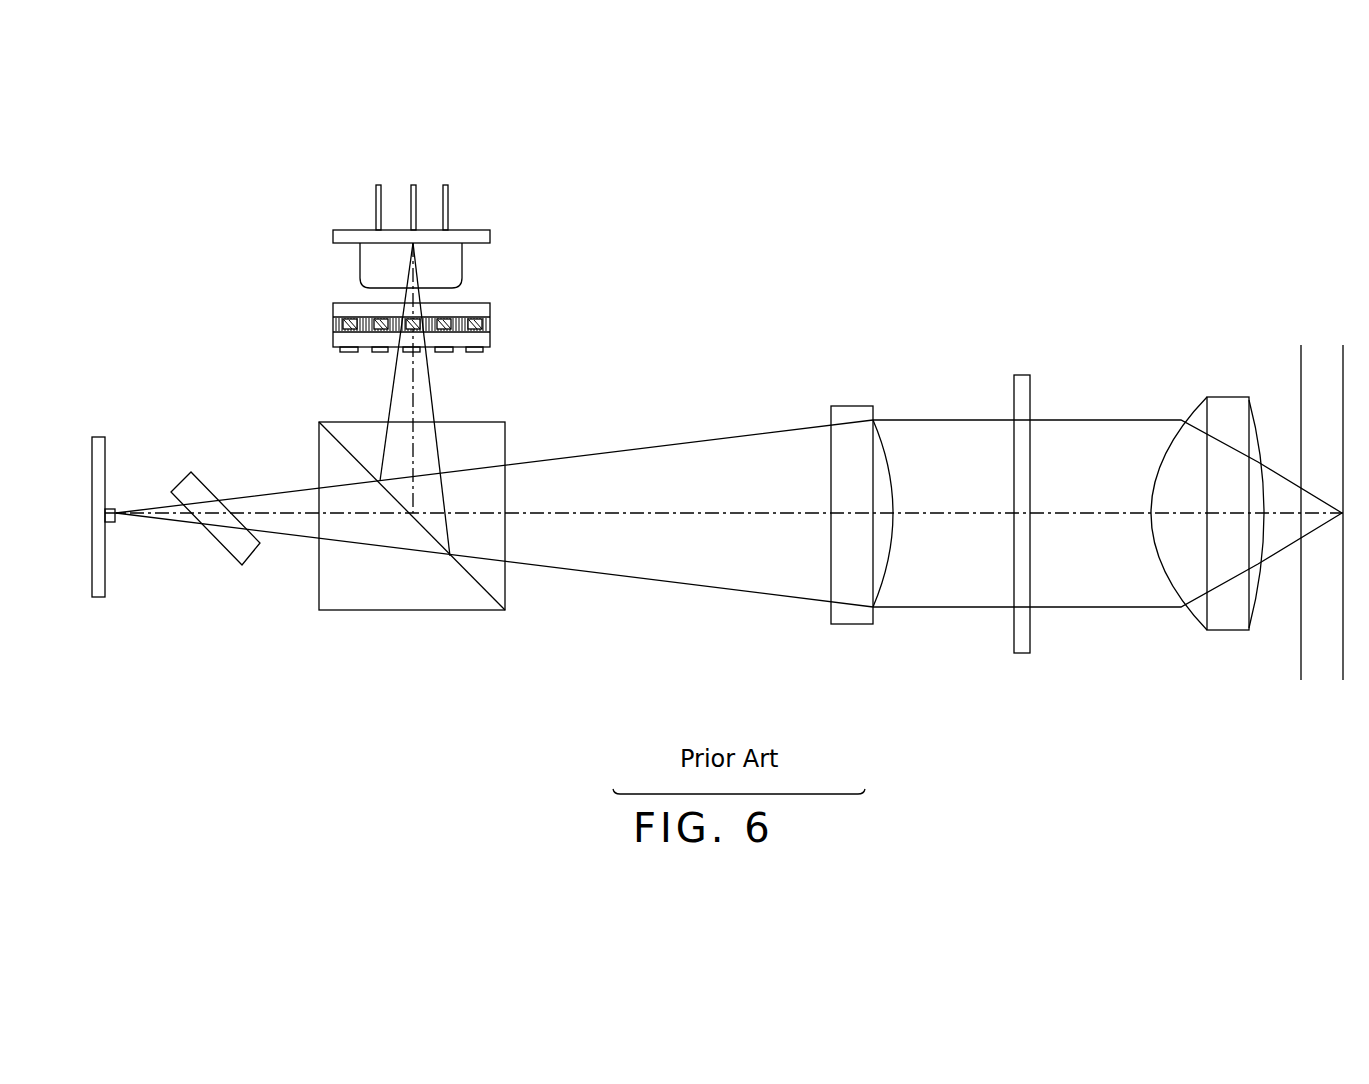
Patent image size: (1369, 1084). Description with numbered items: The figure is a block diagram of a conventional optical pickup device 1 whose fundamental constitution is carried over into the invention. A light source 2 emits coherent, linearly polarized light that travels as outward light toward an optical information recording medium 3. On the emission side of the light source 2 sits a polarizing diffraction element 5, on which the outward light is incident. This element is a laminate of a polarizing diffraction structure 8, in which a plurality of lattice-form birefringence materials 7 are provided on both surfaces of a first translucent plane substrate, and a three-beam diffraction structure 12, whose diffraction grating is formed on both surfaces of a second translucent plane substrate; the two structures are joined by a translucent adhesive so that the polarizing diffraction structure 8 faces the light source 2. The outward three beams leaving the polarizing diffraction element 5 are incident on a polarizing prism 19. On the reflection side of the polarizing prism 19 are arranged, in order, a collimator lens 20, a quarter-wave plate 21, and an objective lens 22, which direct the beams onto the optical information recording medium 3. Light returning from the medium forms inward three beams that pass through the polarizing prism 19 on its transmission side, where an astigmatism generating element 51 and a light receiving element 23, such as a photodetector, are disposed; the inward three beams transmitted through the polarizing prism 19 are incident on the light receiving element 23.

The conventional pickup device 1 is at (153, 366).
The light source 2 is at (360, 262).
The optical information recording medium 3 is at (1298, 380).
The polarizing diffraction element 5 is at (333, 320).
The lattice-form birefringence materials 7 is at (490, 322).
The polarizing diffraction structure 8 is at (473, 298).
The three-beam diffraction structure 12 is at (475, 357).
The polarizing prism 19 is at (397, 612).
The collimator lens 20 is at (850, 405).
The quarter-wave plate 21 is at (1021, 374).
The objective lens 22 is at (1230, 396).
The light receiving element 23 is at (96, 437).
The astigmatism generating element 51 is at (213, 540).